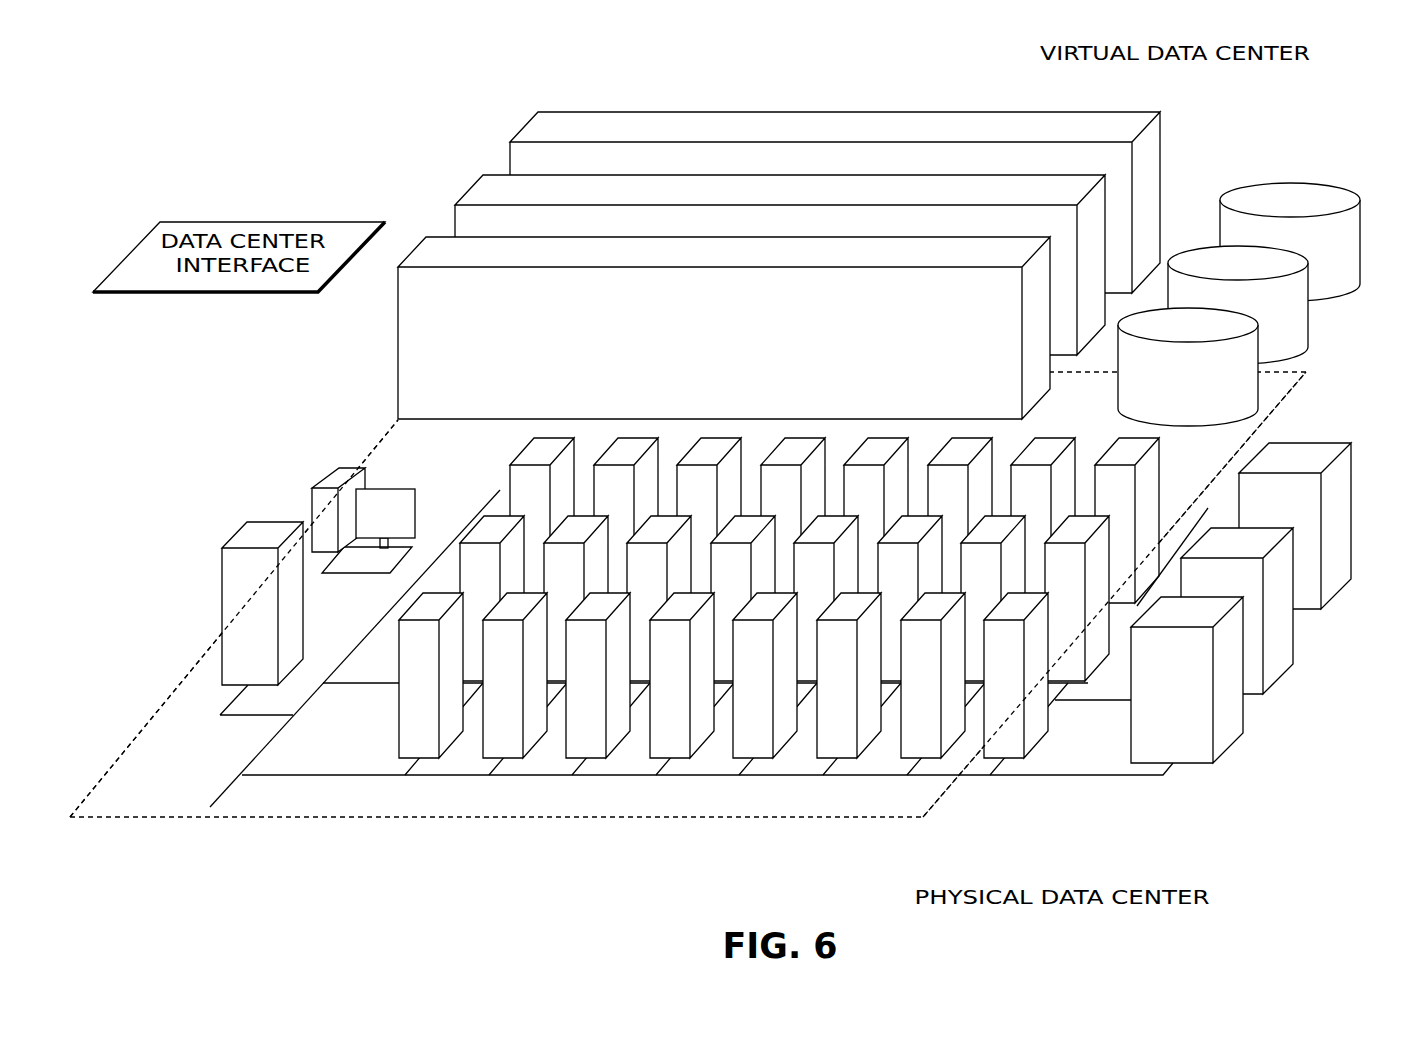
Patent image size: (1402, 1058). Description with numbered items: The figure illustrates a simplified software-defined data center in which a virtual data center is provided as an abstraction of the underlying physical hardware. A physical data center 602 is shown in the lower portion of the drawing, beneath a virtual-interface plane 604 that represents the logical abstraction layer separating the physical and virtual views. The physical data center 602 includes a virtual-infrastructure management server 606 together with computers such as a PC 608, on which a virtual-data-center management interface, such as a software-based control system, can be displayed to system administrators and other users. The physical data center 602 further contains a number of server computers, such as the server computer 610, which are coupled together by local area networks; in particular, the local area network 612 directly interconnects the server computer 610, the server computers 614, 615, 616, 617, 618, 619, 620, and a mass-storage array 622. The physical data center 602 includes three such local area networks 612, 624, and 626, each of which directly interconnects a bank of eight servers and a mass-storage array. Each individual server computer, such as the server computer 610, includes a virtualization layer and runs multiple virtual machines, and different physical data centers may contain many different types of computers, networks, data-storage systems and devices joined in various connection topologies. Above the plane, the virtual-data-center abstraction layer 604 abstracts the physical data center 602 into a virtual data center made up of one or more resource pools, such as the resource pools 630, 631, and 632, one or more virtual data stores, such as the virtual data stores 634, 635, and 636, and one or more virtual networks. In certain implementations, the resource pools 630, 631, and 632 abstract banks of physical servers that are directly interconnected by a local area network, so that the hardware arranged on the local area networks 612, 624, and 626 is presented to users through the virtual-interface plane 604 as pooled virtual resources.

The physical data center 602 is at (1318, 753).
The virtual-interface plane 604 is at (270, 818).
The virtual-infrastructure management server 606 is at (262, 521).
The PC 608 is at (332, 473).
The server computer 610 is at (426, 759).
The local area network 612 is at (337, 776).
The server computer 614 is at (510, 759).
The server computer 615 is at (593, 759).
The server computer 616 is at (677, 759).
The server computer 617 is at (760, 759).
The server computer 618 is at (844, 759).
The server computer 619 is at (928, 759).
The server computer 620 is at (1014, 760).
The mass-storage array 622 is at (1190, 765).
The local area network 624 is at (355, 682).
The local area network 626 is at (412, 590).
The resource pool 630 is at (442, 237).
The resource pool 631 is at (498, 172).
The resource pool 632 is at (560, 110).
The virtual data store 634 is at (1257, 388).
The virtual data store 635 is at (1308, 324).
The virtual data store 636 is at (1290, 183).